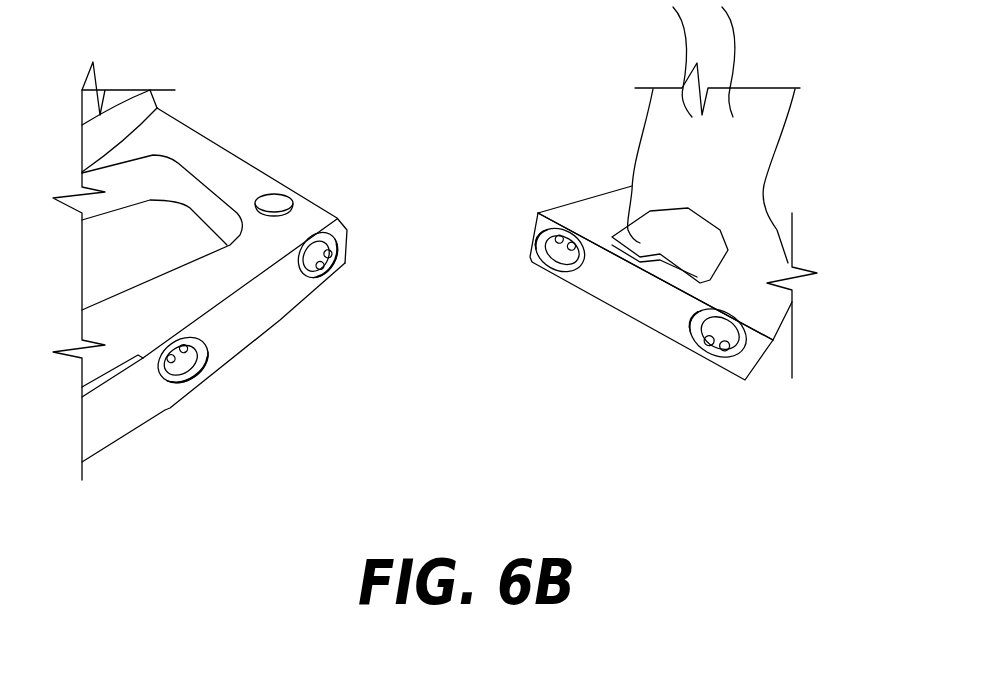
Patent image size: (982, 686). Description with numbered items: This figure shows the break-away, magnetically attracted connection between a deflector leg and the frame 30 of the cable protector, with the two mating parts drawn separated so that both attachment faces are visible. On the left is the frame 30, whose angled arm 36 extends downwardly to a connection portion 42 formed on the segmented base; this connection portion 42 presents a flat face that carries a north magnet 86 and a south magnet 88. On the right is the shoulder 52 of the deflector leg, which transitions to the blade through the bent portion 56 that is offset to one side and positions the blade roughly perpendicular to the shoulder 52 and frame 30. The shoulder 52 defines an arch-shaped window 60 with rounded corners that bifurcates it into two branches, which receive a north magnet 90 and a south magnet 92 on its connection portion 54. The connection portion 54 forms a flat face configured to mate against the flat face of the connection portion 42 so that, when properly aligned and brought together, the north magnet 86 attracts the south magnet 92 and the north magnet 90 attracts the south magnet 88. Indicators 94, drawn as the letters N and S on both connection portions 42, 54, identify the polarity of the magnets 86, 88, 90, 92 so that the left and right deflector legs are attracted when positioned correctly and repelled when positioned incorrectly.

The frame 30 is at (257, 162).
The angled arm 36 is at (227, 158).
The connection portion 42 is at (272, 312).
The north magnet 86 is at (198, 367).
The south magnet 88 is at (318, 253).
The shoulder 52 is at (775, 310).
The connection portion 54 is at (636, 300).
The bent portion 56 is at (732, 192).
The window 60 is at (612, 237).
The north magnet 90 is at (553, 260).
The south magnet 92 is at (722, 333).
The indicator 94 is at (297, 283).